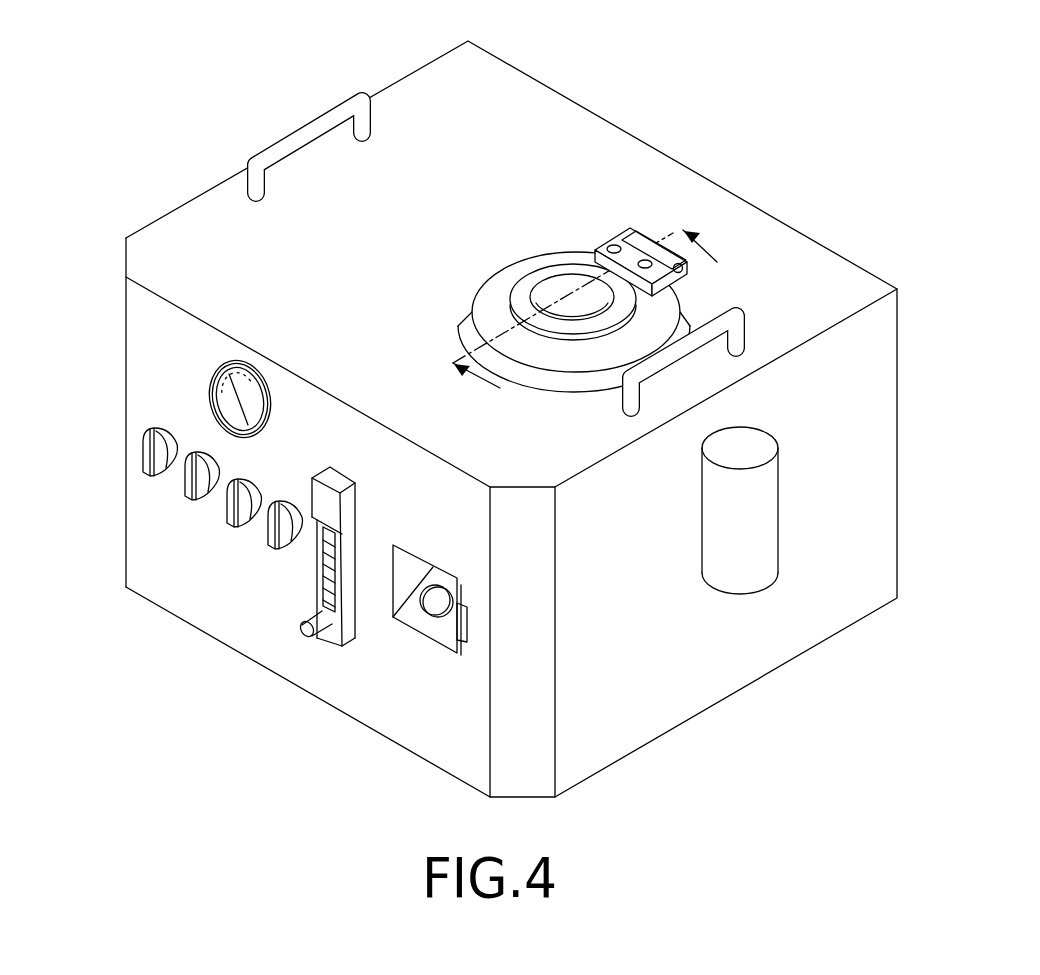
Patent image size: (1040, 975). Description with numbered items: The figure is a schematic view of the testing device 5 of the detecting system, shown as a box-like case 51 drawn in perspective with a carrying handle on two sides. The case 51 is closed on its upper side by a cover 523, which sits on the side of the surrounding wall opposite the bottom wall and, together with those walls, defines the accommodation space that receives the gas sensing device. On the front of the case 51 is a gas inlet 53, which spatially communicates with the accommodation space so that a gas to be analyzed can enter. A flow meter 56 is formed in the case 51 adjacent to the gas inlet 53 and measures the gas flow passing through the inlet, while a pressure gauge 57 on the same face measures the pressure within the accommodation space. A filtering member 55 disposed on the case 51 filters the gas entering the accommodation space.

The testing device 5 is at (531, 413).
The case 51 is at (173, 210).
The cover 523 is at (658, 313).
The gas inlet 53 is at (432, 605).
The filtering member 55 is at (768, 509).
The flow meter 56 is at (320, 562).
The pressure gauge 57 is at (208, 395).